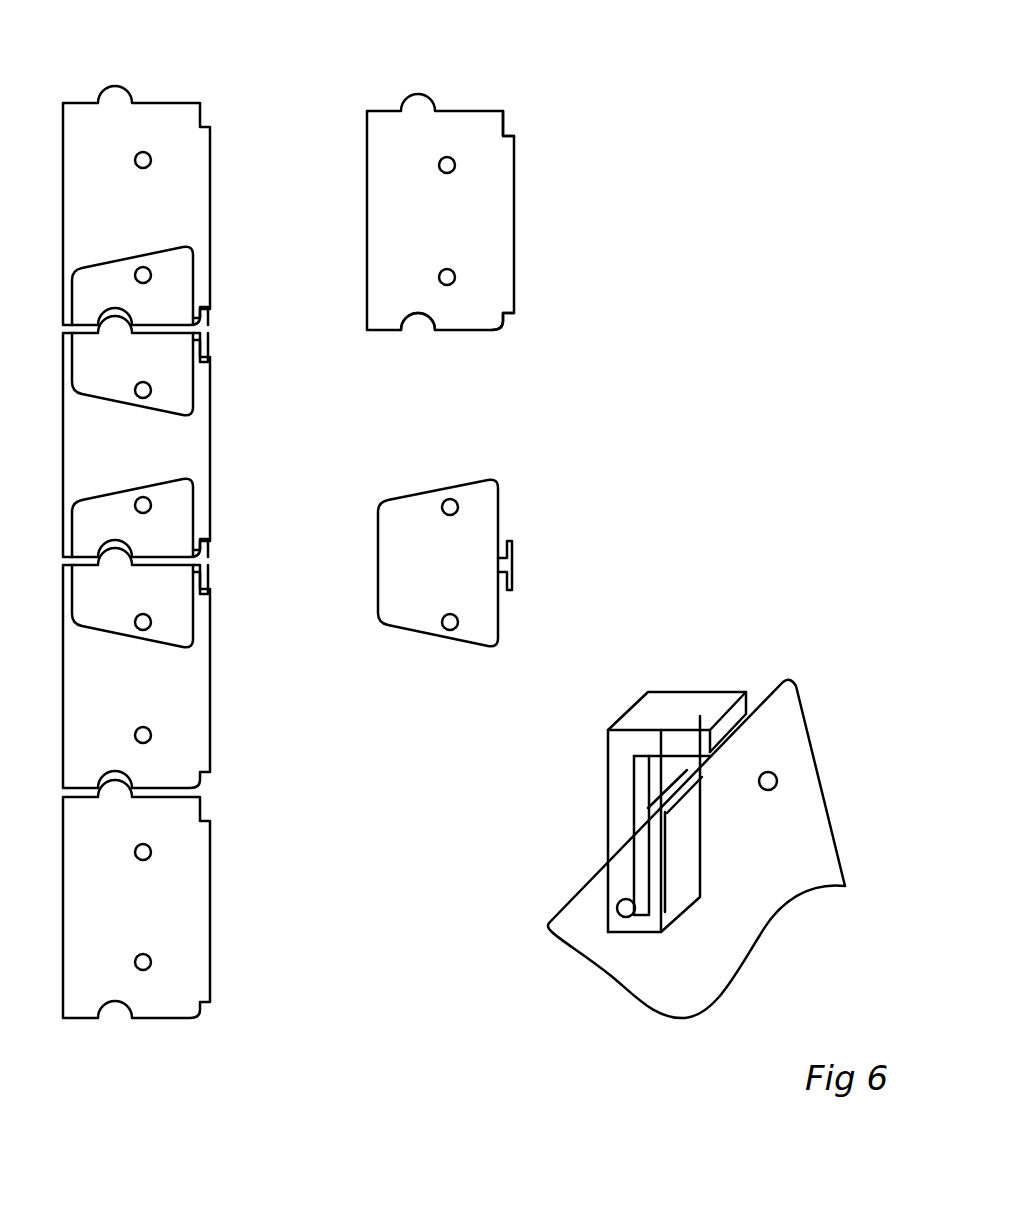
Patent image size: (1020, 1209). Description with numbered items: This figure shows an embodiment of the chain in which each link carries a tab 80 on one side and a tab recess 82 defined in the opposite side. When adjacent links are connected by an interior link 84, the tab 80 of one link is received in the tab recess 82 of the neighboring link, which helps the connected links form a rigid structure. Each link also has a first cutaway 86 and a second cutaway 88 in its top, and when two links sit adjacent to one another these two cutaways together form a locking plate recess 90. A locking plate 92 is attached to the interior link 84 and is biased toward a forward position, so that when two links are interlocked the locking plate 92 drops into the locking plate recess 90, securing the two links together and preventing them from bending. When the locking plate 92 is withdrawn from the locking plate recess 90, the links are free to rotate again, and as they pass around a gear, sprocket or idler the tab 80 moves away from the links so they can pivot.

The tab 80 is at (421, 94).
The tab recess 82 is at (420, 314).
The interior link 84 is at (414, 498).
The first cutaway 86 is at (506, 128).
The second cutaway 88 is at (504, 315).
The locking plate recess 90 is at (242, 798).
The locking plate 92 is at (658, 690).